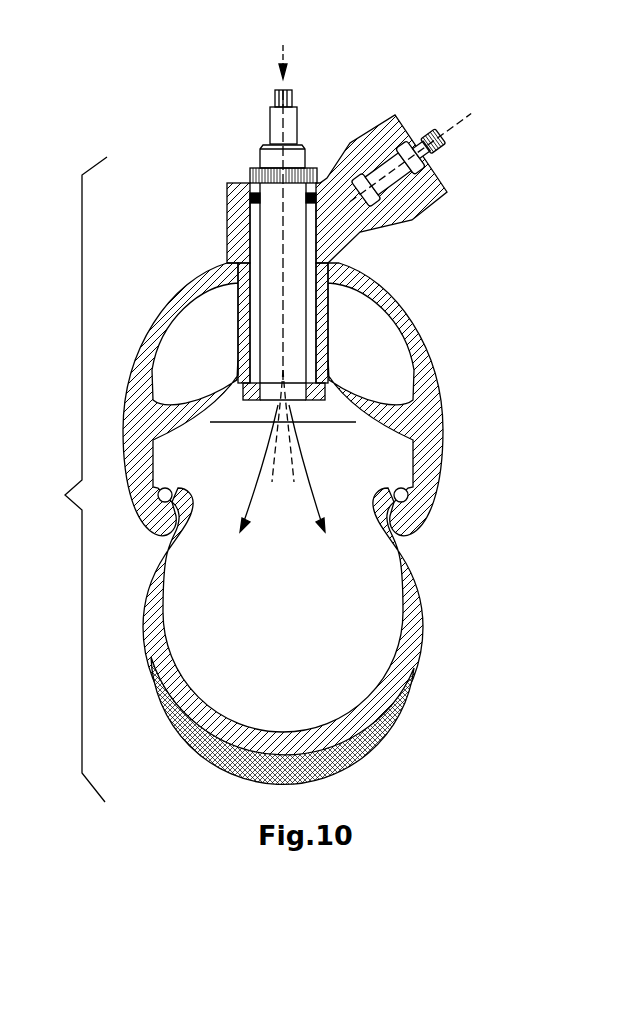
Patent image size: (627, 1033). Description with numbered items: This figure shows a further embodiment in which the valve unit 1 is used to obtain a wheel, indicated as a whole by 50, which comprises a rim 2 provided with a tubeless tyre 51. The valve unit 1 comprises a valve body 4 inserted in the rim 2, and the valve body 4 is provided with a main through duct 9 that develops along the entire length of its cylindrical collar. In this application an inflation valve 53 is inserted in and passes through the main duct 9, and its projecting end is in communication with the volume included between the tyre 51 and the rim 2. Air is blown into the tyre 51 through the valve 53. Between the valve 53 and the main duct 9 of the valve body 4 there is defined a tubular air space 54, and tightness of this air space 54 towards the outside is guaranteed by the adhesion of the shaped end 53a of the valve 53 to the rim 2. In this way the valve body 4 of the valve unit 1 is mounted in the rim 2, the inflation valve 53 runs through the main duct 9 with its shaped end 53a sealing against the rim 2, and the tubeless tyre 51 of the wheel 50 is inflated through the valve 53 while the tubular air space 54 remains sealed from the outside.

The valve unit 1 is at (177, 128).
The rim 2 is at (413, 370).
The valve body 4 is at (238, 206).
The main through duct 9 is at (311, 236).
The wheel 50 is at (65, 497).
The tubeless tyre 51 is at (412, 632).
The inflation valve 53 is at (297, 293).
The shaped end 53a is at (243, 408).
The tubular air space 54 is at (254, 241).